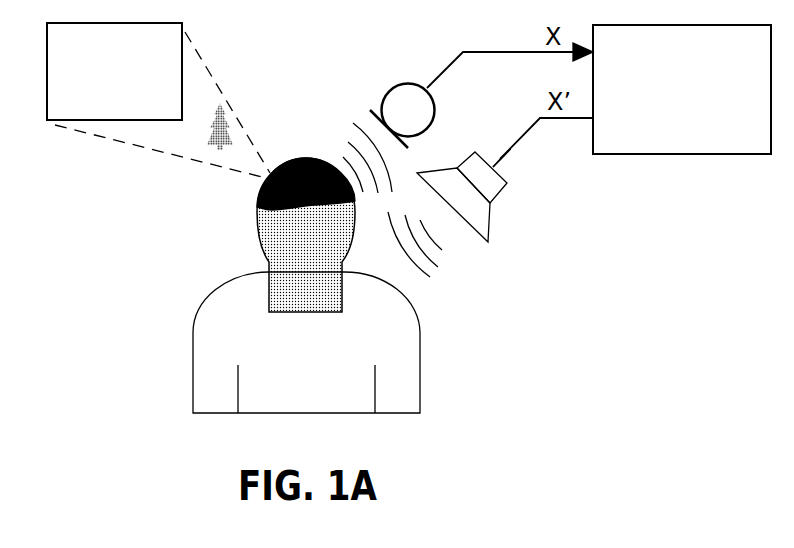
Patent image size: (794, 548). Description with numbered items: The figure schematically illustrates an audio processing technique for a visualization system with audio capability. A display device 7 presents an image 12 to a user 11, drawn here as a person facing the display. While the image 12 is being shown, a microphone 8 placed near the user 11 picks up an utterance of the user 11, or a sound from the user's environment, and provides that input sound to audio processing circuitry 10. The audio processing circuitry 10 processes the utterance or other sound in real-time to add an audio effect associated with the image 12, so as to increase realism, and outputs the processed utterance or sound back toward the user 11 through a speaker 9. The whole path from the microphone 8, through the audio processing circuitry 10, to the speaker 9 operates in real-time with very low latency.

The display device 7 is at (174, 54).
The microphone 8 is at (402, 83).
The speaker 9 is at (492, 205).
The audio processing circuitry 10 is at (762, 55).
The user 11 is at (420, 393).
The image 12 is at (231, 104).